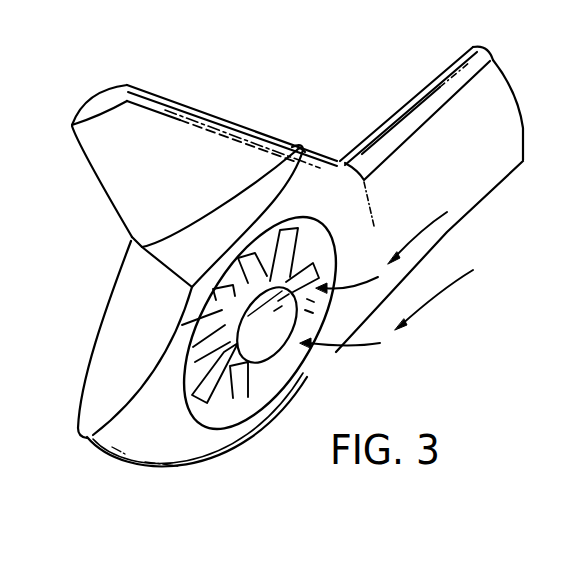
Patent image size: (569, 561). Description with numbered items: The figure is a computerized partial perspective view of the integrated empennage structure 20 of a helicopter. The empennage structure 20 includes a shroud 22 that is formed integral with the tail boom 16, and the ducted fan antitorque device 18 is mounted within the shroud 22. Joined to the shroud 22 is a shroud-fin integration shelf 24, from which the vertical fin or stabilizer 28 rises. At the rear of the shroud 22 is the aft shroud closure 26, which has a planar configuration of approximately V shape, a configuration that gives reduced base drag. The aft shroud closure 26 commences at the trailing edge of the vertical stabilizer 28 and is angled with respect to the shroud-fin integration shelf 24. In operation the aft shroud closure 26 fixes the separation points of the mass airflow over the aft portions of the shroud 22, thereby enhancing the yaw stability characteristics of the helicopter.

The tail boom 16 is at (407, 103).
The ducted fan antitorque device 18 is at (280, 365).
The empennage structure 20 is at (318, 128).
The shroud 22 is at (186, 470).
The shroud-fin integration shelf 24 is at (183, 256).
The aft shroud closure 26 is at (114, 318).
The vertical fin or stabilizer 28 is at (199, 128).